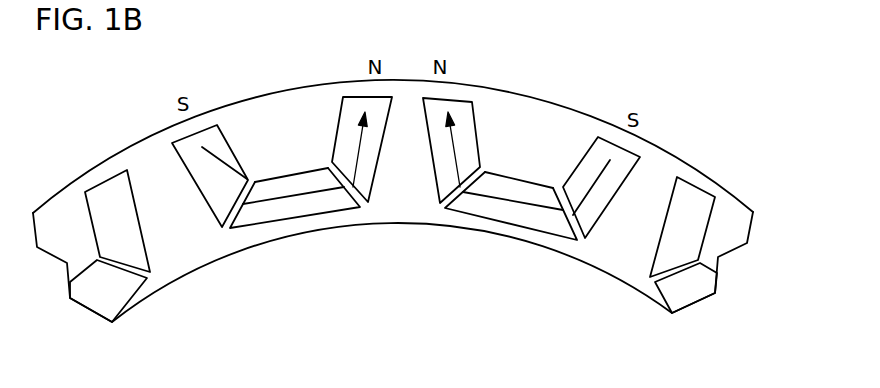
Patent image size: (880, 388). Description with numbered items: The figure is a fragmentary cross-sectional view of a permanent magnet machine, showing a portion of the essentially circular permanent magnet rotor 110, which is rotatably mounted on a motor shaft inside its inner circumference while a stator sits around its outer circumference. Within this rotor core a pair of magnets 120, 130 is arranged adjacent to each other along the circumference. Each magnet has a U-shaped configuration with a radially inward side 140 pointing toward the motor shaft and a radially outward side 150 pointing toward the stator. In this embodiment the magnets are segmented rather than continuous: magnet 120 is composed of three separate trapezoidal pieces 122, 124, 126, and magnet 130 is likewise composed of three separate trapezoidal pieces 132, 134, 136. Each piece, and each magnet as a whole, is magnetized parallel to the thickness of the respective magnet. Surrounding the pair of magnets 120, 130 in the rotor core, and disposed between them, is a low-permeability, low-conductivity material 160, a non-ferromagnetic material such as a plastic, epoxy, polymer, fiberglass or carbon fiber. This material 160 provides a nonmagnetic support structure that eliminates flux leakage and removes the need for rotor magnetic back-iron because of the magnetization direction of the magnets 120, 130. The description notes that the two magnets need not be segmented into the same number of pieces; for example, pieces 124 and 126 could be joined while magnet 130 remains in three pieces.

The permanent magnet rotor 110 is at (657, 148).
The magnet 120 is at (363, 97).
The trapezoidal piece 122 is at (185, 177).
The trapezoidal piece 124 is at (327, 212).
The trapezoidal piece 126 is at (380, 163).
The magnet 130 is at (465, 98).
The trapezoidal piece 132 is at (428, 138).
The trapezoidal piece 134 is at (466, 216).
The trapezoidal piece 136 is at (605, 210).
The radially inward side 140 is at (262, 225).
The radially outward side 150 is at (289, 175).
The low-permeability, low-conductivity material 160 is at (182, 247).